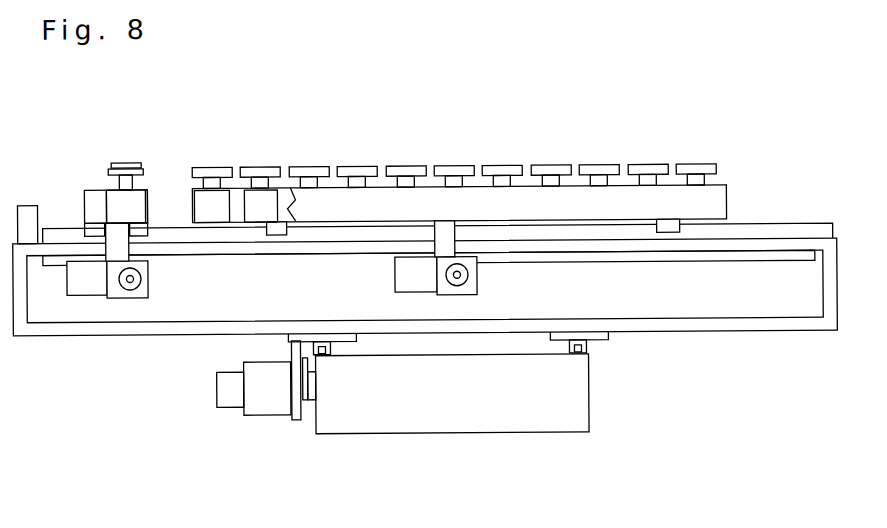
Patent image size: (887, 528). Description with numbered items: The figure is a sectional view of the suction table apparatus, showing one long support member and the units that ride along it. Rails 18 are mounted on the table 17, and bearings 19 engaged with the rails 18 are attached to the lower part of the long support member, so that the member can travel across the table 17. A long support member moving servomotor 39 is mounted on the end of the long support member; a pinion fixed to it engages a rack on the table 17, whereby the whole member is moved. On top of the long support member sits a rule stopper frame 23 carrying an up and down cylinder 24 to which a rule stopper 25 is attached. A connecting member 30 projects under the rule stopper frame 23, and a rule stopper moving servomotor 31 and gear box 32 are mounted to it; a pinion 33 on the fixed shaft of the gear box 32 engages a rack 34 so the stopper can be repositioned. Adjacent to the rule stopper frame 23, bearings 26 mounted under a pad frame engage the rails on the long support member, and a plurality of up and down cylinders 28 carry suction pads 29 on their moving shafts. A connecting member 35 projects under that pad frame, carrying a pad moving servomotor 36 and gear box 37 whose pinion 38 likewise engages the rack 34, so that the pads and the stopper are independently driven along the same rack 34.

The table 17 is at (455, 413).
The rails 18 is at (322, 354).
The bearings 19 is at (322, 341).
The rule stopper frame 23 is at (95, 194).
The up and down cylinder 24 is at (138, 203).
The rule stopper 25 is at (120, 161).
The bearings 26 is at (280, 232).
The up and down cylinders 28 is at (253, 209).
The suction pads 29 is at (213, 171).
The connecting member 30 is at (115, 241).
The rule stopper moving servomotor 31 is at (82, 283).
The gear box 32 is at (143, 288).
The pinion 33 is at (130, 281).
The rack 34 is at (762, 255).
The connecting member 35 is at (445, 230).
The pad moving servomotor 36 is at (418, 282).
The gear box 37 is at (470, 277).
The pinion 38 is at (458, 287).
The long support member moving servomotor 39 is at (274, 399).